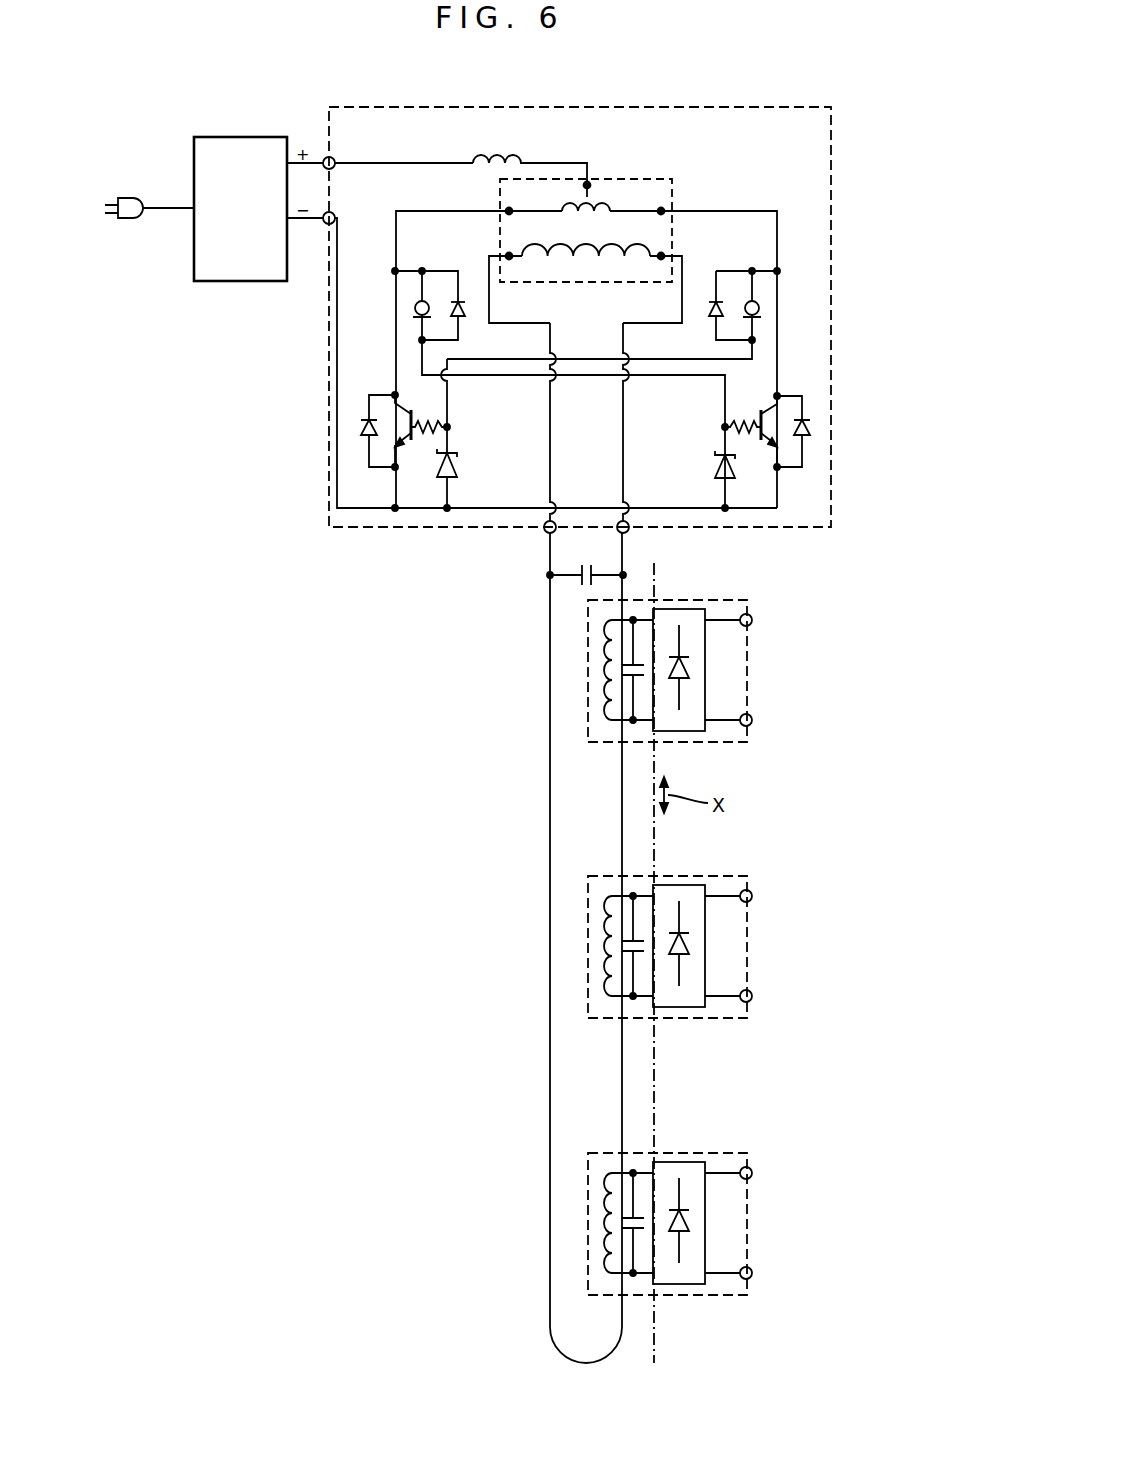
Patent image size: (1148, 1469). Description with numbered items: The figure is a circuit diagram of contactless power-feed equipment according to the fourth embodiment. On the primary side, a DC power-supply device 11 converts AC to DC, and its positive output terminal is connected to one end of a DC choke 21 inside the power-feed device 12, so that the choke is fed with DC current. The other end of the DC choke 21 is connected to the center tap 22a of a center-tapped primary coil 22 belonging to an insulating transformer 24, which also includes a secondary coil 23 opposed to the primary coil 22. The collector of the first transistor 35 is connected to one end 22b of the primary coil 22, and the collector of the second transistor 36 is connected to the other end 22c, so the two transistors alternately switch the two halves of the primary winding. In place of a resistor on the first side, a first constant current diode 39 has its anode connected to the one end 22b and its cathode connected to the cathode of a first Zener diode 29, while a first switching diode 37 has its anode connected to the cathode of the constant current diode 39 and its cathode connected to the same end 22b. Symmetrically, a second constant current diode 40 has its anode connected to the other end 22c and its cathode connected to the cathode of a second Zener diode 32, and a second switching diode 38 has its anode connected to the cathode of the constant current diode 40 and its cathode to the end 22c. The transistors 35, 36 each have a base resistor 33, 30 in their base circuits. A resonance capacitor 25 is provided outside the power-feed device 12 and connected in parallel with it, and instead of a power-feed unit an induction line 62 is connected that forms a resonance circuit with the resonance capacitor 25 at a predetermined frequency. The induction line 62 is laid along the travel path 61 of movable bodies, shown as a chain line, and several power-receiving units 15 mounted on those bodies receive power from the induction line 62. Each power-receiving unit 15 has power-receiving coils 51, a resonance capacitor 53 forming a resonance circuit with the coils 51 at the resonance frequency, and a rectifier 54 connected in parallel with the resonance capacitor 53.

The DC power-supply device 11 is at (225, 282).
The power-feed device 12 is at (831, 165).
The power-receiving unit 15 is at (748, 662).
The DC choke 21 is at (515, 148).
The center-tapped primary coil 22 is at (612, 200).
The center tap 22a is at (587, 182).
The one end of the center-tapped primary coil 22b is at (509, 210).
The other end of the center-tapped primary coil 22c is at (661, 213).
The secondary coil 23 is at (522, 248).
The insulating transformer 24 is at (672, 184).
The resonance capacitor 25 is at (577, 570).
The first Zener diode 29 is at (716, 472).
The base resistor 30 is at (743, 430).
The second Zener diode 32 is at (455, 470).
The base resistor 33 is at (425, 432).
The first transistor 35 is at (418, 414).
The second transistor 36 is at (752, 414).
The first switching diode 37 is at (463, 305).
The second switching diode 38 is at (710, 302).
The first constant current diode 39 is at (427, 303).
The second constant current diode 40 is at (750, 301).
The power-receiving coils 51 is at (612, 717).
The resonance capacitor 53 is at (640, 676).
The rectifier 54 is at (694, 721).
The travel path 61 is at (656, 582).
The induction line 62 is at (549, 1220).